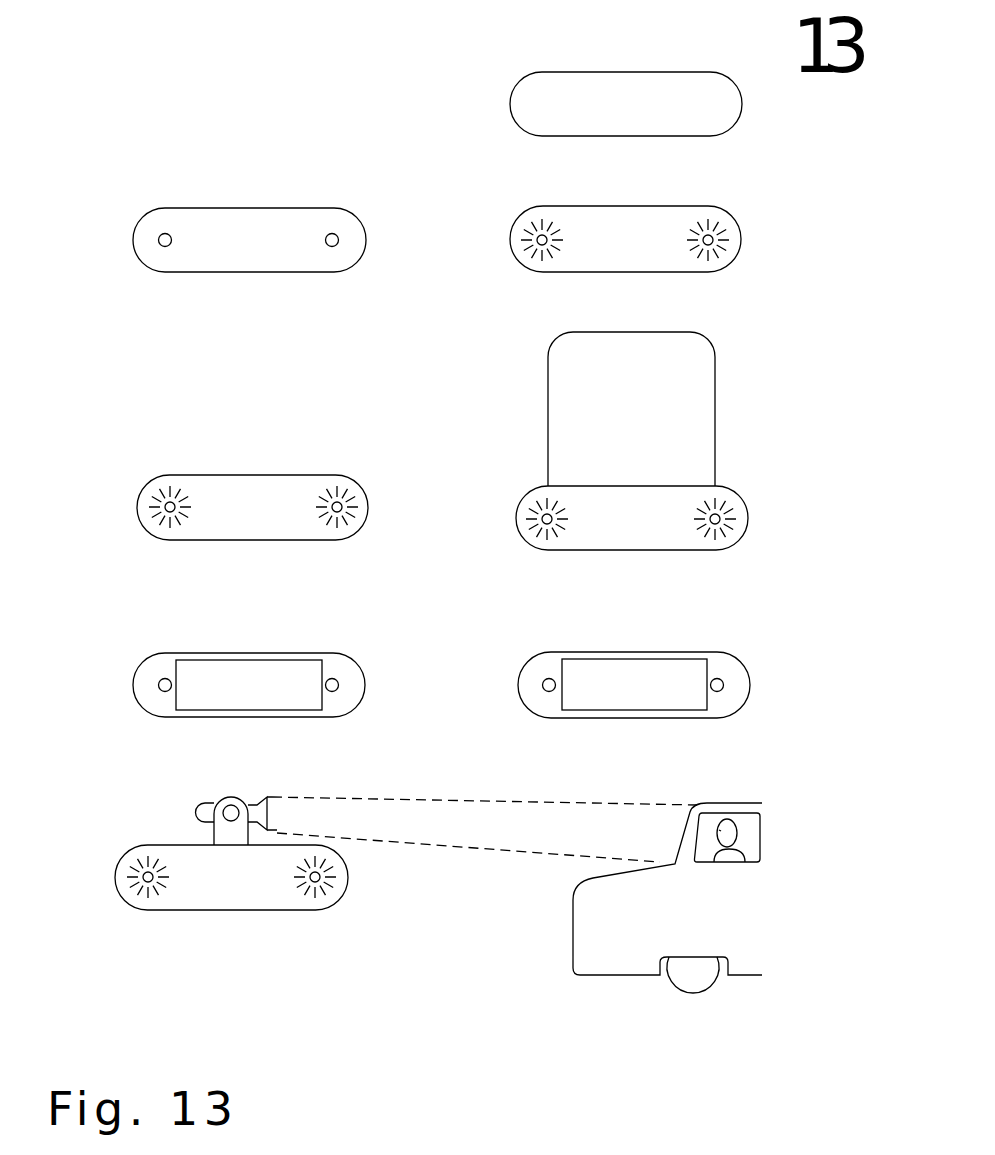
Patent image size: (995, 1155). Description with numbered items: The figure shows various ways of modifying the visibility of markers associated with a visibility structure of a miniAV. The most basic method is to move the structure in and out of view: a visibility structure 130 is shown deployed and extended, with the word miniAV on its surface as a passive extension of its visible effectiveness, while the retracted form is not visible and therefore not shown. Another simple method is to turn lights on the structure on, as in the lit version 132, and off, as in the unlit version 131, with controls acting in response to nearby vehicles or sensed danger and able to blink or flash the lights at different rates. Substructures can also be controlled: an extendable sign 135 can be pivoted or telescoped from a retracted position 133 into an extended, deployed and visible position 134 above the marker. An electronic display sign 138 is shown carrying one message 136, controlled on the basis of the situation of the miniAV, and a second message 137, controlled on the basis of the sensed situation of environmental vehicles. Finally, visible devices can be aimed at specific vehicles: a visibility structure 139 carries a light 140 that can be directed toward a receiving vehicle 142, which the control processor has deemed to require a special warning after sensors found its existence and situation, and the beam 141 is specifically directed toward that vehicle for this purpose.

The visibility structure 130 is at (510, 93).
The visibility structure with lights off 131 is at (366, 250).
The visibility structure with lights on 132 is at (515, 230).
The retracted position 133 is at (368, 520).
The extended, deployed and visible position 134 is at (516, 502).
The extendable sign 135 is at (548, 420).
The first message 136 is at (280, 667).
The second message 137 is at (750, 690).
The electronic display sign 138 is at (297, 660).
The visibility structure with directed light 139 is at (348, 892).
The light 140 is at (260, 800).
The beam 141 is at (557, 855).
The receiving vehicle 142 is at (573, 925).